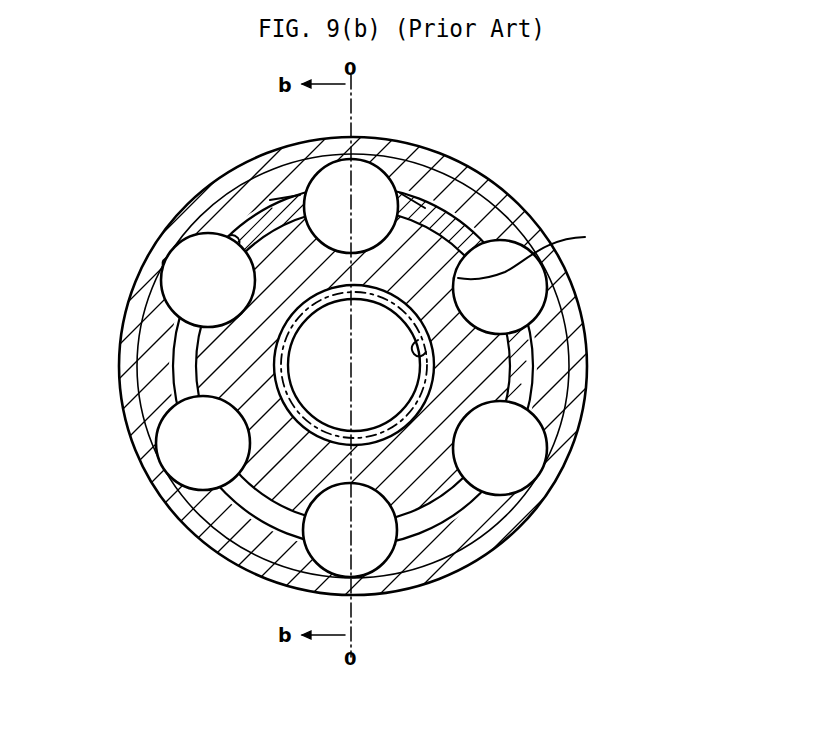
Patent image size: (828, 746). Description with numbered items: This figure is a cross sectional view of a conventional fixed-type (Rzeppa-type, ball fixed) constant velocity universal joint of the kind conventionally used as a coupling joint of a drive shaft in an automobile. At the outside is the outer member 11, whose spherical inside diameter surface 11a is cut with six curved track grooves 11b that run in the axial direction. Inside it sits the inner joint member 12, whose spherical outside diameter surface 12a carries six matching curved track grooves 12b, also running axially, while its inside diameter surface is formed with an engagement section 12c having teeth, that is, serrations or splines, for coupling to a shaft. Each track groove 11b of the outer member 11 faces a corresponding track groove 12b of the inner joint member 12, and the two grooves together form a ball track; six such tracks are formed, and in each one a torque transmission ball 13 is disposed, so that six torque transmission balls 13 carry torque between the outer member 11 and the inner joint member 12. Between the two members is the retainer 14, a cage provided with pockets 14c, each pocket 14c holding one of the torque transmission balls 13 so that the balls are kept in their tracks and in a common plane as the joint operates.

The outer member 11 is at (200, 186).
The spherical inside diameter surface 11a is at (235, 245).
The curved track grooves 11b is at (170, 262).
The inner joint member 12 is at (438, 259).
The spherical outside diameter surface 12a is at (453, 250).
The curved track grooves 12b is at (544, 252).
The engagement section 12c is at (420, 349).
The torque transmission balls 13 is at (405, 181).
The retainer 14 is at (258, 216).
The pockets 14c is at (300, 193).